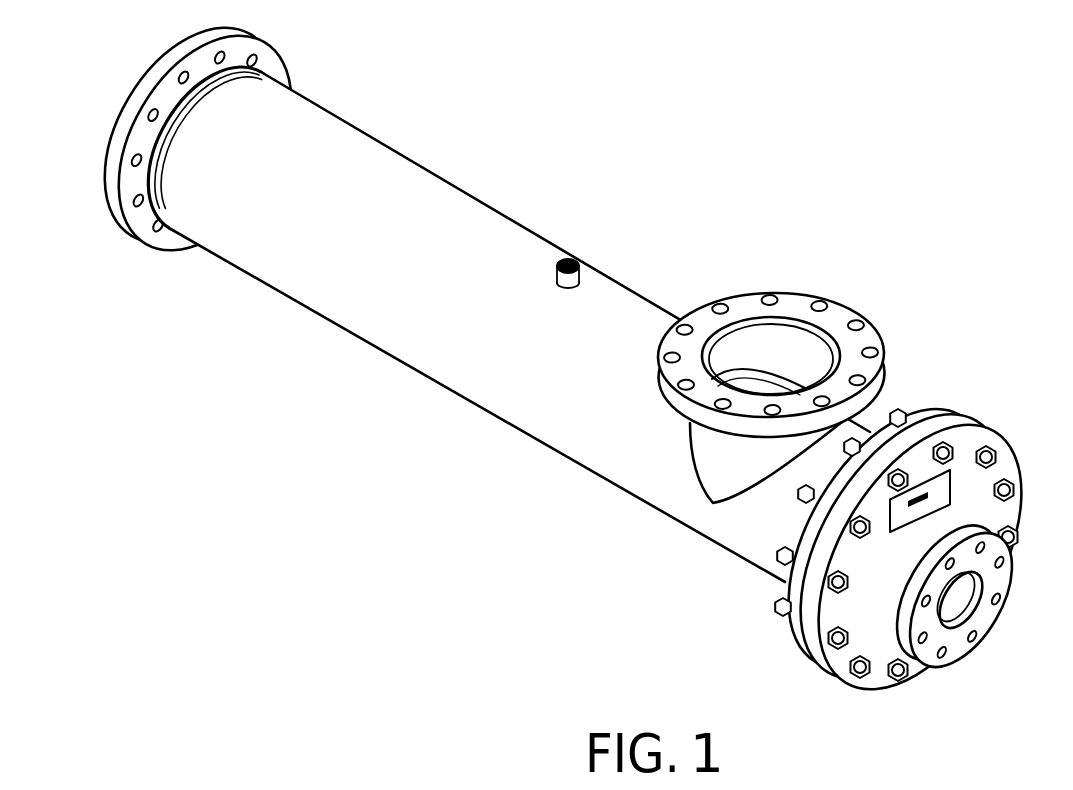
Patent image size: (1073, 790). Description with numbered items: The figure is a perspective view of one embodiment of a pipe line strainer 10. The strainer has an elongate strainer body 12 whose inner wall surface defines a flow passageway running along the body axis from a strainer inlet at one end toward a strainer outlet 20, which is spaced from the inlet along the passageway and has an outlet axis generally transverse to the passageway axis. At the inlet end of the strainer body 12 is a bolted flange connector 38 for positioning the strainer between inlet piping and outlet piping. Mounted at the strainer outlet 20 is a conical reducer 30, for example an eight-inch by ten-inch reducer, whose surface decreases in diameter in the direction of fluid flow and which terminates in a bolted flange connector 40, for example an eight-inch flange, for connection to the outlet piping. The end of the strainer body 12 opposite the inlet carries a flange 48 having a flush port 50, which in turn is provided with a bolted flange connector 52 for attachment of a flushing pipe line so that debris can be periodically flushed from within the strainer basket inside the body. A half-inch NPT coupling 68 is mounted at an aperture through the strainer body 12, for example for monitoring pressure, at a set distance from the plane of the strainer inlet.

The pipe line strainer 10 is at (569, 362).
The strainer body 12 is at (392, 160).
The strainer outlet 20 is at (818, 353).
The conical reducer 30 is at (708, 485).
The bolted flange connector 38 is at (225, 30).
The bolted flange connector 40 is at (805, 297).
The flange 48 is at (1003, 465).
The flush port 50 is at (967, 600).
The bolted flange connector 52 is at (1017, 577).
The NPT coupling 68 is at (577, 257).